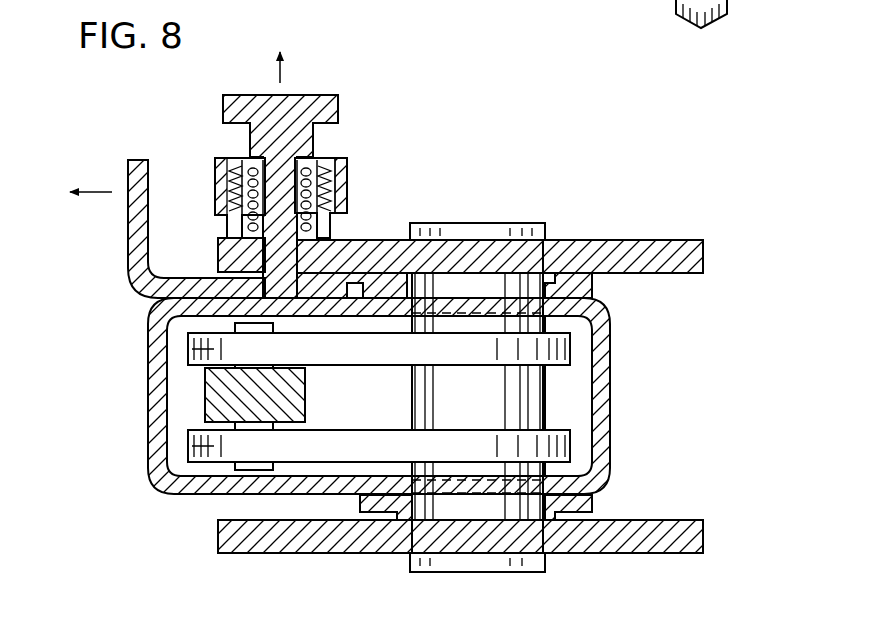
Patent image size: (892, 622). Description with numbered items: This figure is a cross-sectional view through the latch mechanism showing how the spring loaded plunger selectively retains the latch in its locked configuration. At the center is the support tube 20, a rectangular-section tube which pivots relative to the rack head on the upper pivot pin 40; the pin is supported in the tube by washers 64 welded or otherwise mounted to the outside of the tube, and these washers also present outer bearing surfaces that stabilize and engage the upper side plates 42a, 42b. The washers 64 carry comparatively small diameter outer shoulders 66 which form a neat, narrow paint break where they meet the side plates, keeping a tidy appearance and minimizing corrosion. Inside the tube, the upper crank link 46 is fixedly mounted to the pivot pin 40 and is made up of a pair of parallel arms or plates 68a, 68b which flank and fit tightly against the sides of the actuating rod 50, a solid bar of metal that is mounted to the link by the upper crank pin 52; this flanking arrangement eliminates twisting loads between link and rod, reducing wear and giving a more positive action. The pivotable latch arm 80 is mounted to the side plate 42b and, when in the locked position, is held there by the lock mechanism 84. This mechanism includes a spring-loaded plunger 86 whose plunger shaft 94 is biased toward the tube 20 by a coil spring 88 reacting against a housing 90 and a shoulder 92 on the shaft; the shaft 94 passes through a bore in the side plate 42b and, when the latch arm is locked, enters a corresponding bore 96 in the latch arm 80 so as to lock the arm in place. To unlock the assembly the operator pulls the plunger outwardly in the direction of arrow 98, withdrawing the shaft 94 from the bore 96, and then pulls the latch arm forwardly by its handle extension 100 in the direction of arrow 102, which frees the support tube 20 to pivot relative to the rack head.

The support tube 20 is at (606, 355).
The upper pivot pin 40 is at (500, 230).
The upper side plate 42a is at (655, 535).
The upper side plate 42b is at (655, 248).
The upper crank link 46 is at (582, 436).
The actuating rod 50 is at (215, 395).
The upper crank pin 52 is at (250, 470).
The washers 64 is at (590, 290).
The outer shoulders 66 is at (548, 270).
The parallel arm 68a is at (196, 448).
The parallel arm 68b is at (196, 347).
The latch arm 80 is at (128, 225).
The lock mechanism 84 is at (350, 110).
The plunger 86 is at (303, 140).
The coil spring 88 is at (228, 192).
The housing 90 is at (340, 176).
The shoulder 92 is at (310, 163).
The plunger shaft 94 is at (285, 262).
The bore 96 is at (262, 262).
The arrow 98 is at (282, 78).
The handle extension 100 is at (150, 172).
The arrow 102 is at (100, 185).